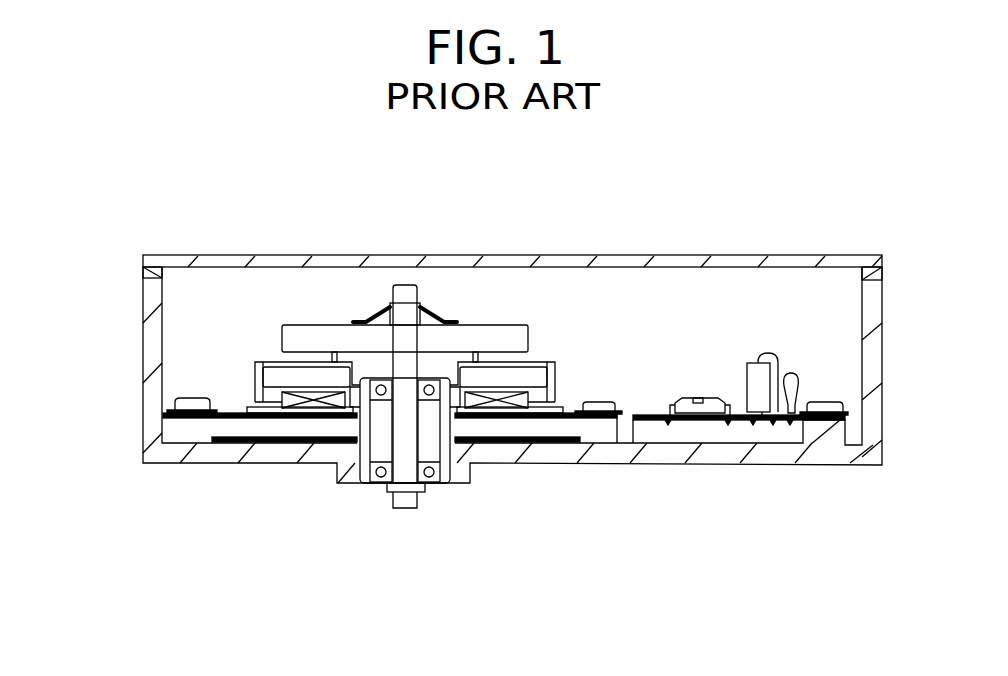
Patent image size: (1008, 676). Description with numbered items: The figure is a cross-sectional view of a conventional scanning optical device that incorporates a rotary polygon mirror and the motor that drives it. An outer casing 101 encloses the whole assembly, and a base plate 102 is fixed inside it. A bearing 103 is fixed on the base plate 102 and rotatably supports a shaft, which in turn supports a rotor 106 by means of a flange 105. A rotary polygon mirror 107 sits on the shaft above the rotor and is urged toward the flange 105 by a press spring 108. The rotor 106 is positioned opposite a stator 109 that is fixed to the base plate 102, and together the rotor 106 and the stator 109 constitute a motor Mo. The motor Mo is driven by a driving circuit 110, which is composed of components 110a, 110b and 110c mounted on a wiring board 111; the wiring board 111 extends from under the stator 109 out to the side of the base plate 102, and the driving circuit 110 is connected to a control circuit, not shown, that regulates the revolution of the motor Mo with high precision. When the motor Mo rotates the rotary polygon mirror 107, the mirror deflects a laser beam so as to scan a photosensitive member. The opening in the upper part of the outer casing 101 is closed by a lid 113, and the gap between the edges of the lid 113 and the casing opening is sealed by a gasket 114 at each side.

The outer casing 101 is at (193, 446).
The base plate 102 is at (240, 428).
The bearing 103 is at (375, 483).
The flange 105 is at (357, 356).
The rotor 106 is at (538, 382).
The rotary polygon mirror 107 is at (505, 327).
The press spring 108 is at (430, 308).
The stator 109 is at (510, 400).
The driving circuit 110 is at (763, 467).
The component 110a is at (693, 420).
The component 110b is at (762, 420).
The component 110c is at (821, 451).
The wiring board 111 is at (635, 422).
The lid 113 is at (610, 257).
The gasket 114 is at (143, 267).
The motor Mo is at (422, 394).